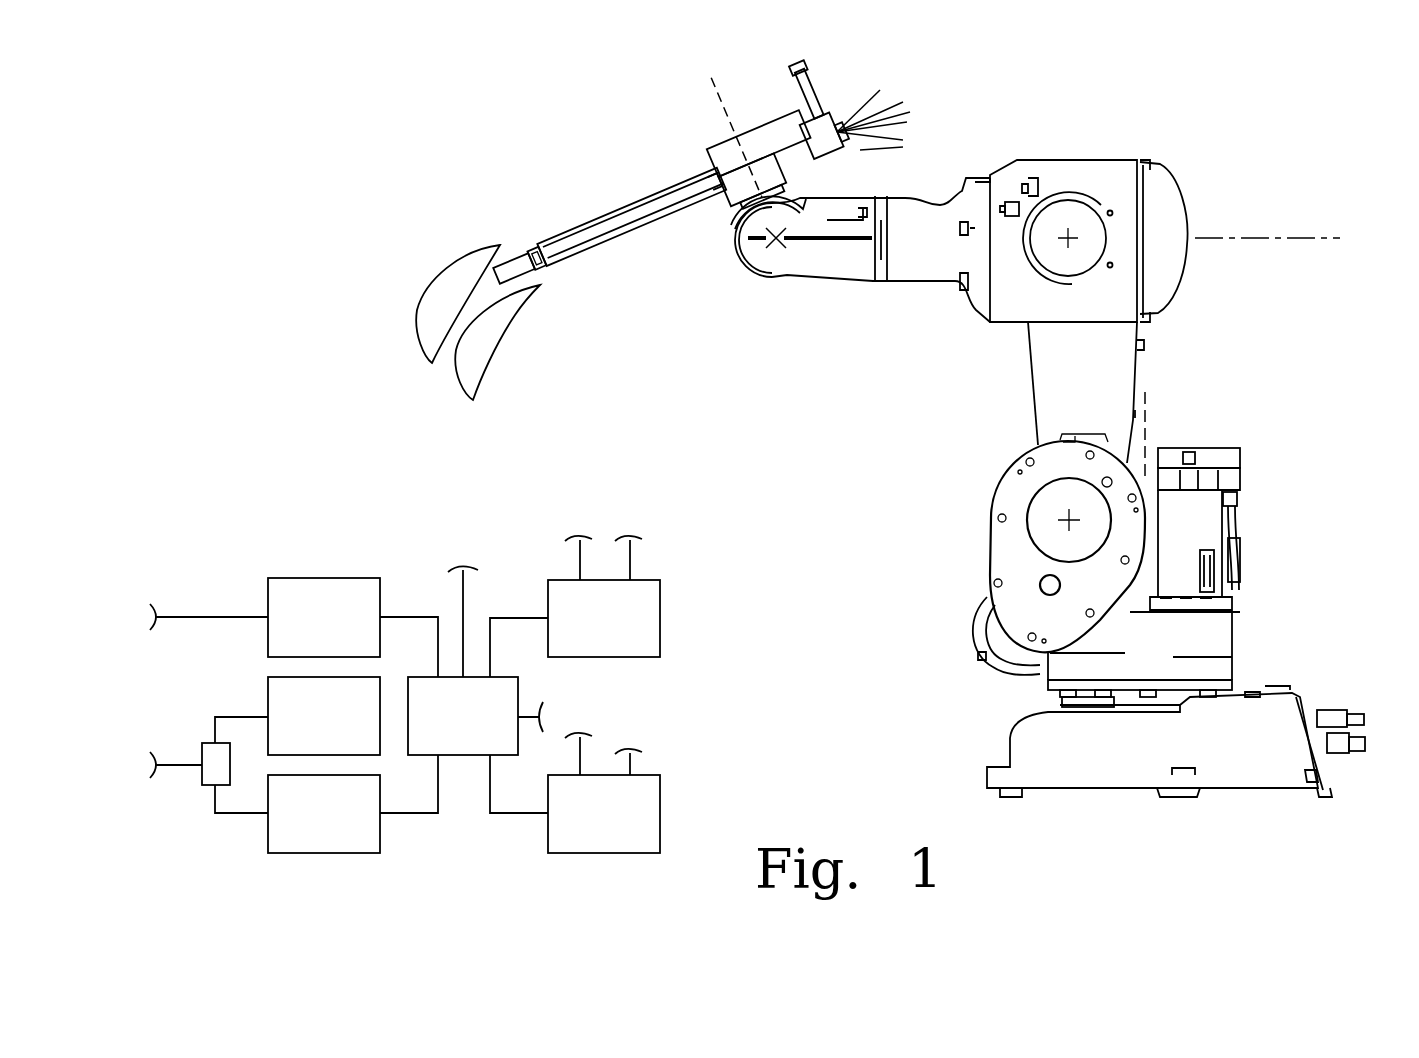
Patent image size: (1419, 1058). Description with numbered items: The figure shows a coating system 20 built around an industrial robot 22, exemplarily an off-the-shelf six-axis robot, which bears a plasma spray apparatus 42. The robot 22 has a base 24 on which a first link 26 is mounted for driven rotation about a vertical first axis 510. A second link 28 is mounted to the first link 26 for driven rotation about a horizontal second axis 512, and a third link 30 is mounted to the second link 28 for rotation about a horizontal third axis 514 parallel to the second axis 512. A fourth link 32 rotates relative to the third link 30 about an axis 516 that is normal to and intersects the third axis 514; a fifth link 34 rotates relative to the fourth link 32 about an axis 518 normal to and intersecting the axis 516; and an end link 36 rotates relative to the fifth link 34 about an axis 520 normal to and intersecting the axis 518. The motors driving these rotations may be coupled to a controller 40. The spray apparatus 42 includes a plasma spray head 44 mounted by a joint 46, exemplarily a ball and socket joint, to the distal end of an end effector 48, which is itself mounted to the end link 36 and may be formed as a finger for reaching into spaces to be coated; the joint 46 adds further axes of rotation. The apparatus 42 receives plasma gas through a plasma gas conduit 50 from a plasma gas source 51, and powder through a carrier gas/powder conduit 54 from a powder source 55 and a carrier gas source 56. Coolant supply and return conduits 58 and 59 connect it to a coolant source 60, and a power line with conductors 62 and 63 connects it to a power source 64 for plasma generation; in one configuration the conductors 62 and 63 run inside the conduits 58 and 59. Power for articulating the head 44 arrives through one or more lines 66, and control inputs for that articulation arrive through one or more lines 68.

The coating system 20 is at (369, 478).
The industrial robot 22 is at (1272, 412).
The base 24 is at (1252, 742).
The first link 26 is at (1210, 637).
The second link 28 is at (1100, 383).
The third link 30 is at (1113, 292).
The fourth link 32 is at (858, 268).
The fifth link 34 is at (745, 281).
The end link 36 is at (790, 195).
The controller 40 is at (518, 680).
The spray apparatus 42 is at (577, 172).
The plasma spray head 44 is at (522, 262).
The joint 46 is at (548, 280).
The end effector 48 is at (640, 228).
The plasma gas conduit 50 is at (918, 120).
The plasma gas source 51 is at (290, 578).
The carrier gas/powder conduit 54 is at (910, 105).
The powder source 55 is at (268, 690).
The carrier gas source 56 is at (290, 853).
The coolant supply conduit 58 is at (912, 132).
The coolant return conduit 59 is at (878, 155).
The coolant source 60 is at (645, 853).
The power line conductor 62 is at (866, 98).
The power line conductor 63 is at (855, 125).
The power source 64 is at (660, 618).
The power line for head articulation 66 is at (813, 72).
The control line for head articulation 68 is at (803, 80).
The first axis 510 is at (1150, 418).
The second axis 512 is at (1060, 522).
The third axis 514 is at (1072, 240).
The fourth link axis 516 is at (1265, 238).
The fifth link axis 518 is at (777, 250).
The end link axis 520 is at (722, 118).